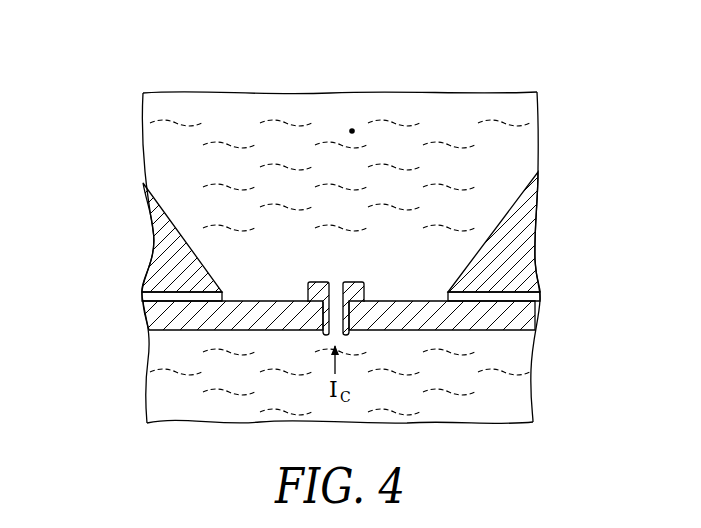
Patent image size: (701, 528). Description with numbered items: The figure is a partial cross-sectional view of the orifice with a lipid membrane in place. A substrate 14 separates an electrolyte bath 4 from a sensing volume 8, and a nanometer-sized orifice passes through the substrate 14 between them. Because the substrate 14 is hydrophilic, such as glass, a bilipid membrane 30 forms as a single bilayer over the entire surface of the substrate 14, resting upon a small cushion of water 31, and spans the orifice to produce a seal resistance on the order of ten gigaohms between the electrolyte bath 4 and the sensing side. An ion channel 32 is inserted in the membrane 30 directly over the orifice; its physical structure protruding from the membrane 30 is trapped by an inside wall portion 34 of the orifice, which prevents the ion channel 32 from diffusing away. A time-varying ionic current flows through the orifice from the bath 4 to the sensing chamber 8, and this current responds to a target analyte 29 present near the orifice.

The electrolyte bath 4 is at (507, 385).
The sensing chamber 8 is at (483, 110).
The substrate 14 is at (505, 245).
The target analyte 29 is at (352, 128).
The bilipid membrane 30 is at (148, 318).
The cushion of water 31 is at (140, 297).
The ion channel 32 is at (335, 288).
The inside wall portion 34 is at (182, 240).